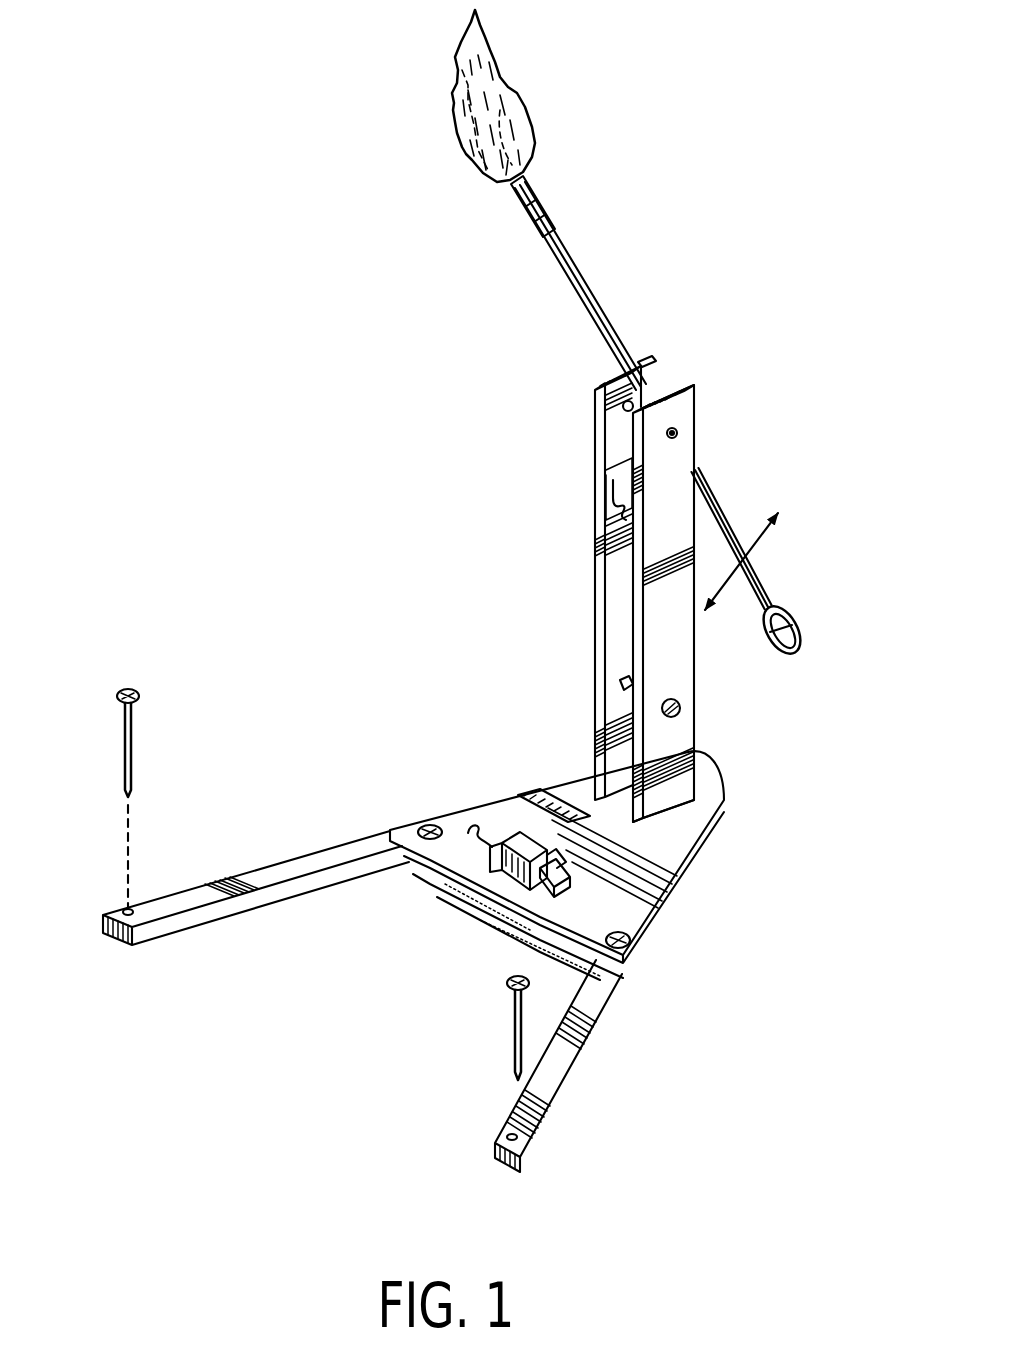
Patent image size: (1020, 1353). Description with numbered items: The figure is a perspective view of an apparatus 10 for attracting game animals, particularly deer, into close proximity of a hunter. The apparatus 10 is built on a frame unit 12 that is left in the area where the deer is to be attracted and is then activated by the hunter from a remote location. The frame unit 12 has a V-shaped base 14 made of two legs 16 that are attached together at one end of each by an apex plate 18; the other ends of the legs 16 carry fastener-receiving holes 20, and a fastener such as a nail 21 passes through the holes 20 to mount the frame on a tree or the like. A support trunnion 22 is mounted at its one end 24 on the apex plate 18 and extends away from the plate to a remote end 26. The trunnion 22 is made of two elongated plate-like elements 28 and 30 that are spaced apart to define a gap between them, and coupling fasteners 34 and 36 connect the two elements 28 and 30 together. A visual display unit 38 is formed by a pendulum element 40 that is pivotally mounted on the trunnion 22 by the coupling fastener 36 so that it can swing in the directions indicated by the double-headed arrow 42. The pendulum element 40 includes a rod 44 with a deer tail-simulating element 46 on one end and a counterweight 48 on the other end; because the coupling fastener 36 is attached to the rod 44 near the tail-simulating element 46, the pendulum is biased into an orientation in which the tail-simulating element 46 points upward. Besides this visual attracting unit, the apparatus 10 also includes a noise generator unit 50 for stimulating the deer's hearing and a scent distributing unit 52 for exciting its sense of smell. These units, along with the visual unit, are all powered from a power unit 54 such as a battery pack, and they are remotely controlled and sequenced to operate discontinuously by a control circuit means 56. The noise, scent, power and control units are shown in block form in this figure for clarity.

The apparatus 10 is at (205, 362).
The frame unit 12 is at (570, 528).
The V-shaped base 14 is at (707, 897).
The legs 16 is at (258, 870).
The apex plate 18 is at (570, 800).
The fastener-receiving holes 20 is at (132, 912).
The nail 21 is at (510, 1030).
The support trunnion 22 is at (592, 678).
The one end of trunnion 24 is at (680, 811).
The remote end of trunnion 26 is at (668, 390).
The elongated plate-like element 28 is at (672, 466).
The elongated plate-like element 30 is at (594, 408).
The coupling fastener 34 is at (680, 708).
The coupling fastener 36 is at (677, 430).
The visual display unit 38 is at (657, 382).
The pendulum element 40 is at (541, 199).
The double-headed arrow 42 is at (757, 553).
The rod 44 is at (718, 505).
The deer tail-simulating element 46 is at (460, 135).
The counterweight 48 is at (800, 623).
The noise generator unit 50 is at (537, 893).
The scent distributing unit 52 is at (567, 895).
The power unit 54 is at (498, 884).
The control circuit means 56 is at (487, 842).